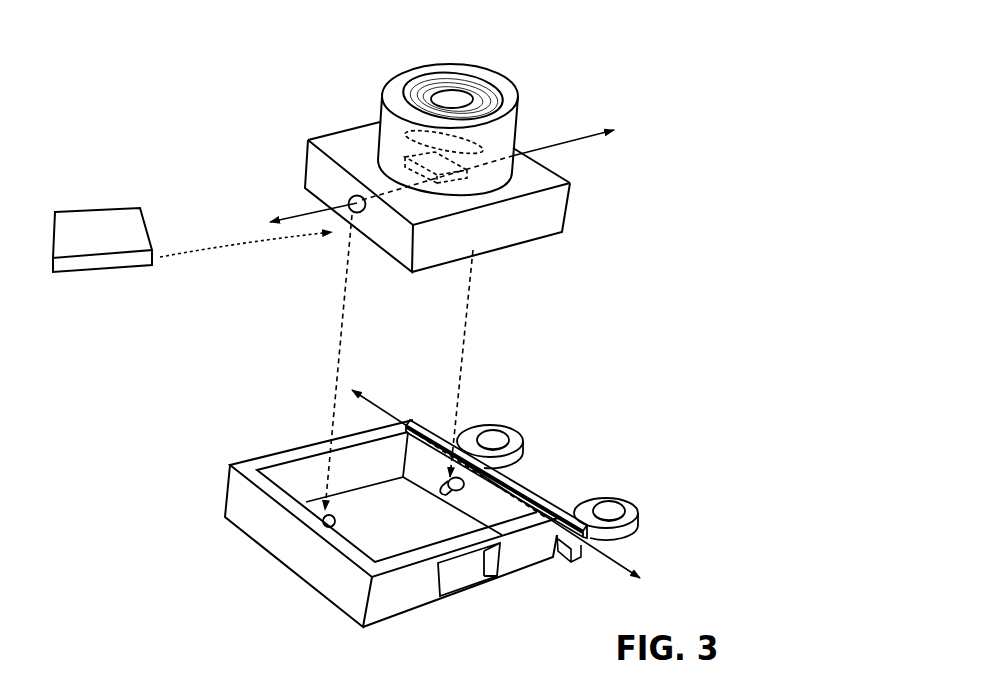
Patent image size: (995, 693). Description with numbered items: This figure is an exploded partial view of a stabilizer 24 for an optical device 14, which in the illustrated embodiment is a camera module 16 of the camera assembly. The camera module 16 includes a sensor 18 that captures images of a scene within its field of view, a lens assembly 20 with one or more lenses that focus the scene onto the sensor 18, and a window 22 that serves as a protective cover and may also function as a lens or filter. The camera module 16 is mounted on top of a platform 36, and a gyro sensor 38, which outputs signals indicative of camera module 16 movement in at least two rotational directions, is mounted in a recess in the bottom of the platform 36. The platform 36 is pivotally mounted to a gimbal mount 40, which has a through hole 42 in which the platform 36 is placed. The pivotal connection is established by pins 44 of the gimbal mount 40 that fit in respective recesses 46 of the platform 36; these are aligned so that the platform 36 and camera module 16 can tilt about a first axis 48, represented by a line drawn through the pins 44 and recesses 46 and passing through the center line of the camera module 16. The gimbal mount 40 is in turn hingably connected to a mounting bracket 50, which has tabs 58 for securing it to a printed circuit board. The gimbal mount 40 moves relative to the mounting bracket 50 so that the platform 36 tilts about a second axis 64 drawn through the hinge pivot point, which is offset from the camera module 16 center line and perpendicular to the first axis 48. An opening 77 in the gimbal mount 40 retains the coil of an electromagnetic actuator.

The optical device 14 is at (503, 136).
The camera module 16 is at (513, 102).
The sensor 18 is at (410, 157).
The lens assembly 20 is at (417, 138).
The window 22 is at (455, 99).
The stabilizer 24 is at (278, 97).
The platform 36 is at (540, 229).
The gyro sensor 38 is at (118, 228).
The gimbal mount 40 is at (242, 498).
The through hole 42 is at (298, 477).
The pins 44 is at (443, 494).
The recesses 46 is at (351, 198).
The first axis 48 is at (307, 218).
The mounting bracket 50 is at (537, 483).
The tabs 58 is at (505, 430).
The second axis 64 is at (607, 556).
The opening 77 is at (467, 566).